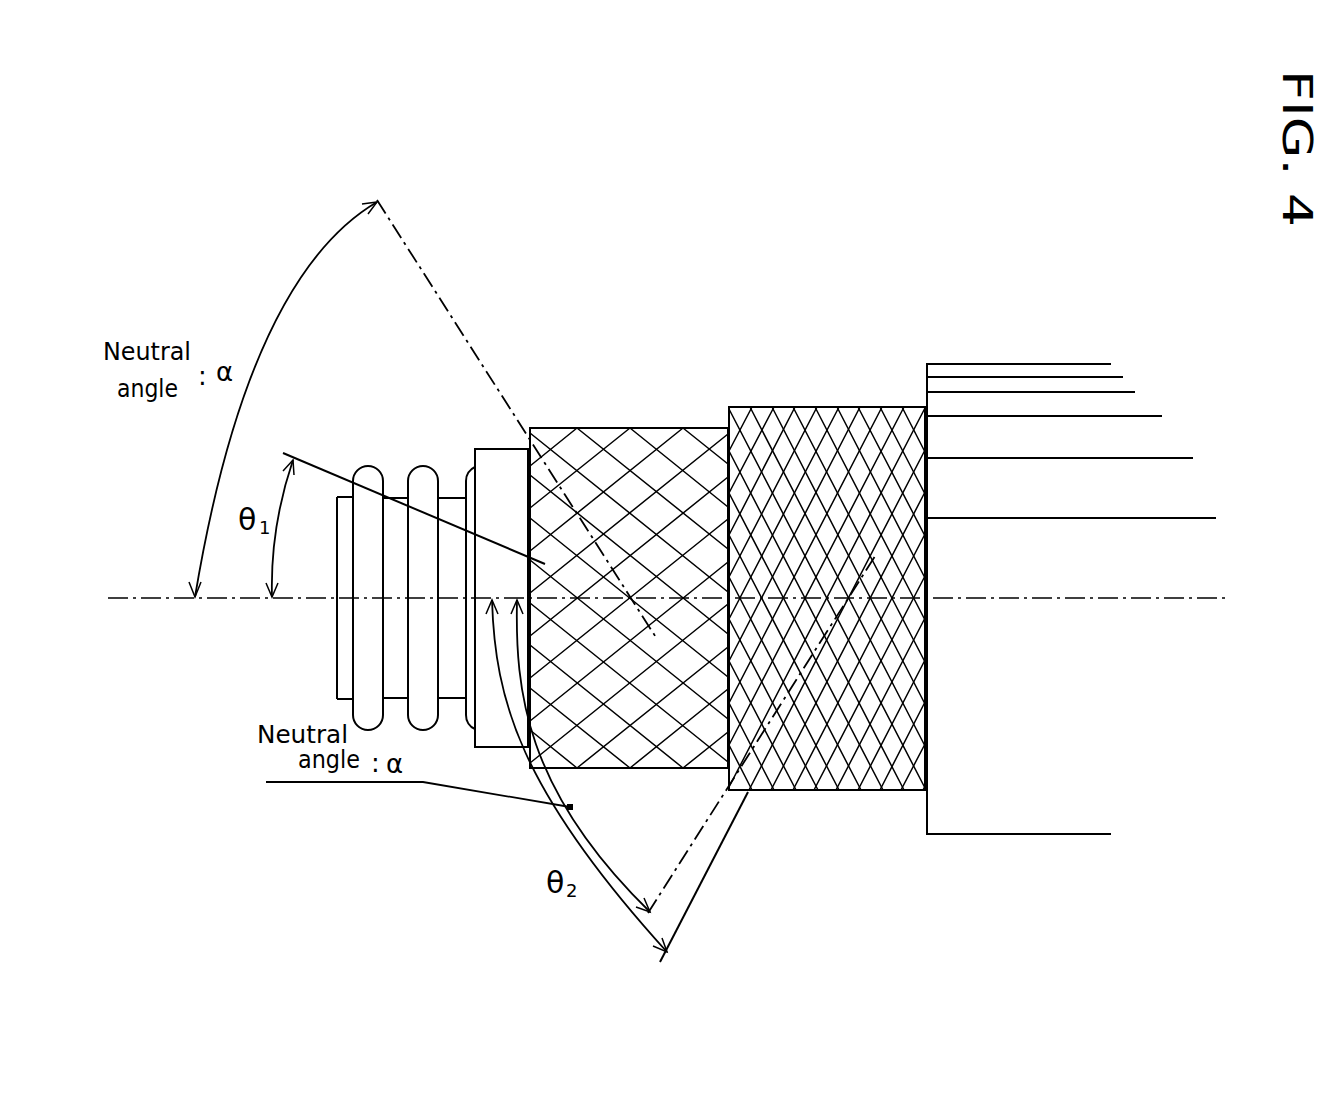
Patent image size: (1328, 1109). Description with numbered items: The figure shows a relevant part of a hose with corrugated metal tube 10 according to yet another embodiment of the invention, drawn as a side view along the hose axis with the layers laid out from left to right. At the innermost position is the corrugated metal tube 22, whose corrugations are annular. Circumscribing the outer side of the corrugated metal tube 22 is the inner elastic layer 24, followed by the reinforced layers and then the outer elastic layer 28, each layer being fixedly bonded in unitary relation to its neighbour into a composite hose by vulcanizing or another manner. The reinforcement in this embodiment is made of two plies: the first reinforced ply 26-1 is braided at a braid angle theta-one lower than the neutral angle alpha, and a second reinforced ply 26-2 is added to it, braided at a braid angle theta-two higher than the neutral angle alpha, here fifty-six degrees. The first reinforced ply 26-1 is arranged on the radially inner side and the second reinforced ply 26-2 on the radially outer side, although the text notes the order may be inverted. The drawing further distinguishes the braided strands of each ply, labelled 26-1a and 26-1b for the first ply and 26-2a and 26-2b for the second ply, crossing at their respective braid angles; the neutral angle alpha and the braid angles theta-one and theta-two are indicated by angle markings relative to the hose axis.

The flexible tube assembly 10 is at (970, 232).
The corrugated metal tube 22 is at (371, 450).
The inner elastic layer 24 is at (503, 434).
The first reinforced ply 26-1 is at (590, 410).
The first braid inner layer 26-1a is at (560, 738).
The first braid outer layer 26-1b is at (660, 769).
The second reinforced ply 26-2 is at (794, 390).
The second braid inner layer 26-2a is at (782, 791).
The second braid outer layer 26-2b is at (895, 791).
The outer elastic layer 28 is at (1049, 345).